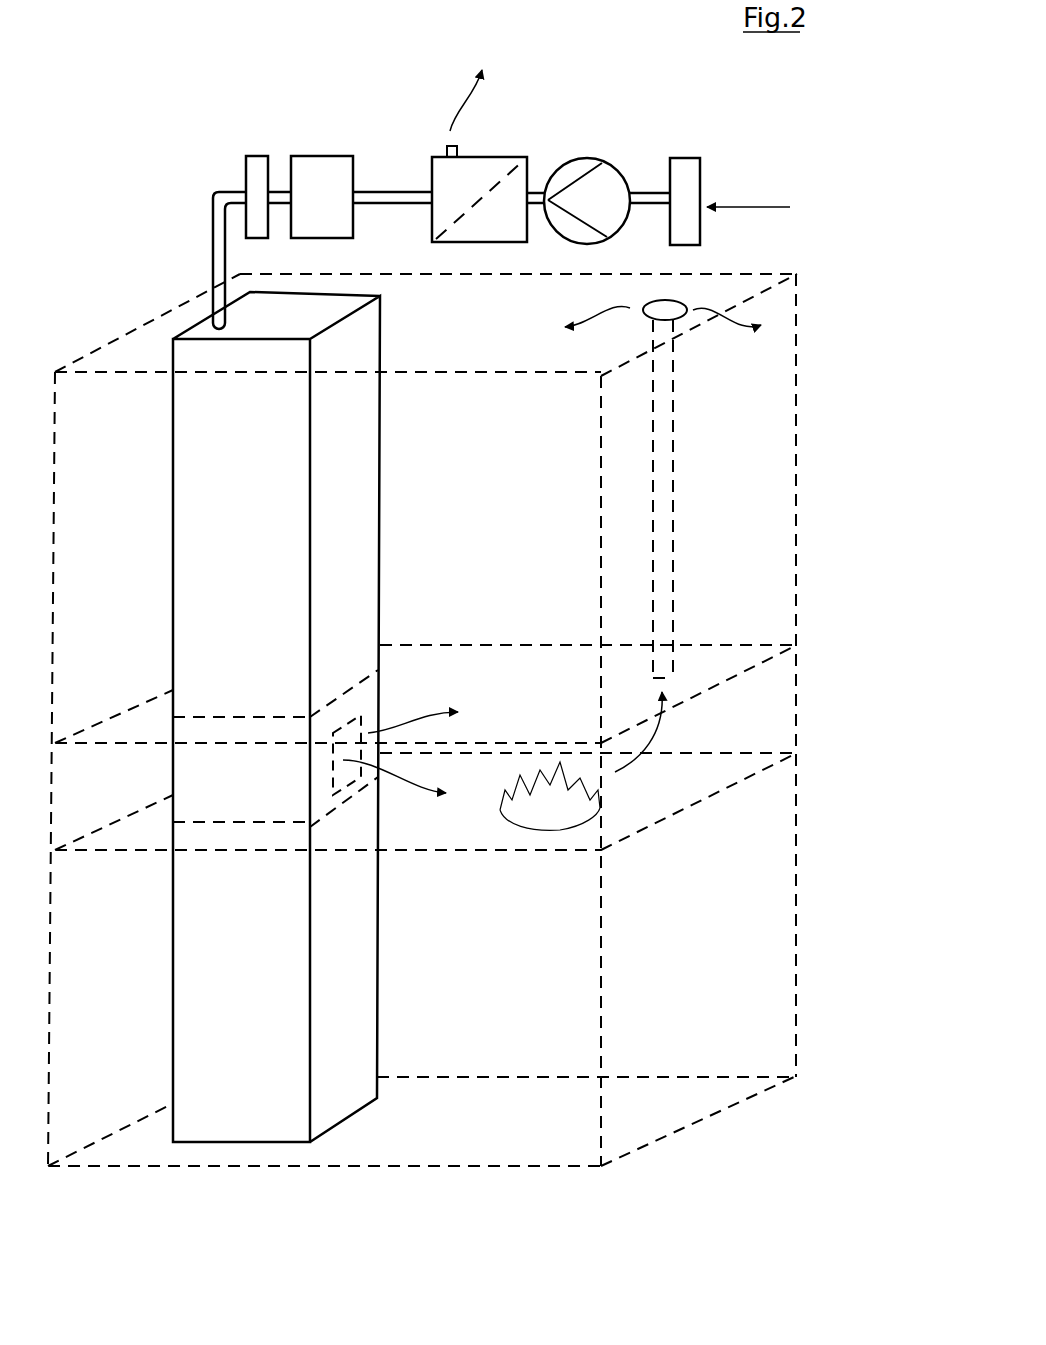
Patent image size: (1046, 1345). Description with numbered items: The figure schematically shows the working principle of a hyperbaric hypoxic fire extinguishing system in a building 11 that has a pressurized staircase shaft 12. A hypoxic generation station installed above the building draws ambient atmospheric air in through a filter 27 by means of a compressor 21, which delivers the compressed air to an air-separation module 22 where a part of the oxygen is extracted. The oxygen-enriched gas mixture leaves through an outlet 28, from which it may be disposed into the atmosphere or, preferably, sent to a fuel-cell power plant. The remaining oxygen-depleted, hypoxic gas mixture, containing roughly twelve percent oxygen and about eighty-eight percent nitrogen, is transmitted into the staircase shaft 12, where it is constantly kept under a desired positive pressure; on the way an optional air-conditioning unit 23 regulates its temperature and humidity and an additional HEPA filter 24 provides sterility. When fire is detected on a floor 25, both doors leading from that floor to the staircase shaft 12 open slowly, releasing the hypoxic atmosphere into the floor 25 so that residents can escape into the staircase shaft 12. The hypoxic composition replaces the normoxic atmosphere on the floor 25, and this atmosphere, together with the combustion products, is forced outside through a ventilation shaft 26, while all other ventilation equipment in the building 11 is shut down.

The building 11 is at (422, 720).
The pressurized staircase shaft 12 is at (315, 717).
The compressor 21 is at (572, 178).
The air-separation module 22 is at (478, 182).
The air-conditioning unit 23 is at (322, 197).
The HEPA filter 24 is at (258, 178).
The floor 25 is at (632, 761).
The ventilation shaft 26 is at (660, 483).
The filter 27 is at (685, 180).
The outlet 28 is at (445, 148).